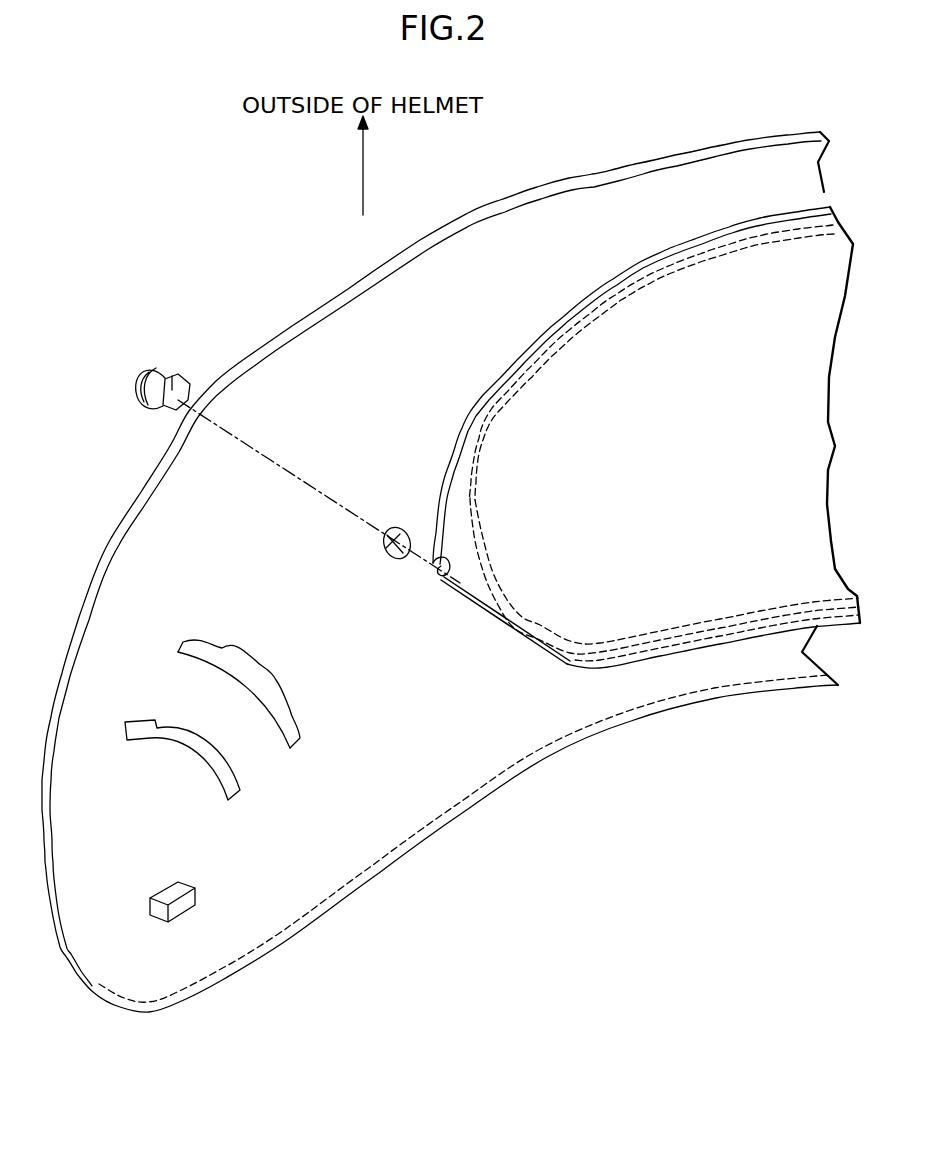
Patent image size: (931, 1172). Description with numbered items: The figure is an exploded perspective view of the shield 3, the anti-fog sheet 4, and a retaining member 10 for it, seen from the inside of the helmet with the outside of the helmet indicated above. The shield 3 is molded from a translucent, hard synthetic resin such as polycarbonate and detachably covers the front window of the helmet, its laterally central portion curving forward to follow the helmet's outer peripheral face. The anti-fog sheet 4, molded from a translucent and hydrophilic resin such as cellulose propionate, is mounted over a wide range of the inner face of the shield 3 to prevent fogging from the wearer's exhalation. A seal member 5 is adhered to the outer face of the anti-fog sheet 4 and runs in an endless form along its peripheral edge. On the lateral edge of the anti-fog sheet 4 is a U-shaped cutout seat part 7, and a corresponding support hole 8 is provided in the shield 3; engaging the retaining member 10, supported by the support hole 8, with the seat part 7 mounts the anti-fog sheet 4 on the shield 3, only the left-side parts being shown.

The shield 3 is at (553, 208).
The anti-fog sheet 4 is at (703, 303).
The seal member 5 is at (583, 322).
The seat part 7 is at (437, 572).
The support hole 8 is at (393, 558).
The retaining member 10 is at (172, 370).